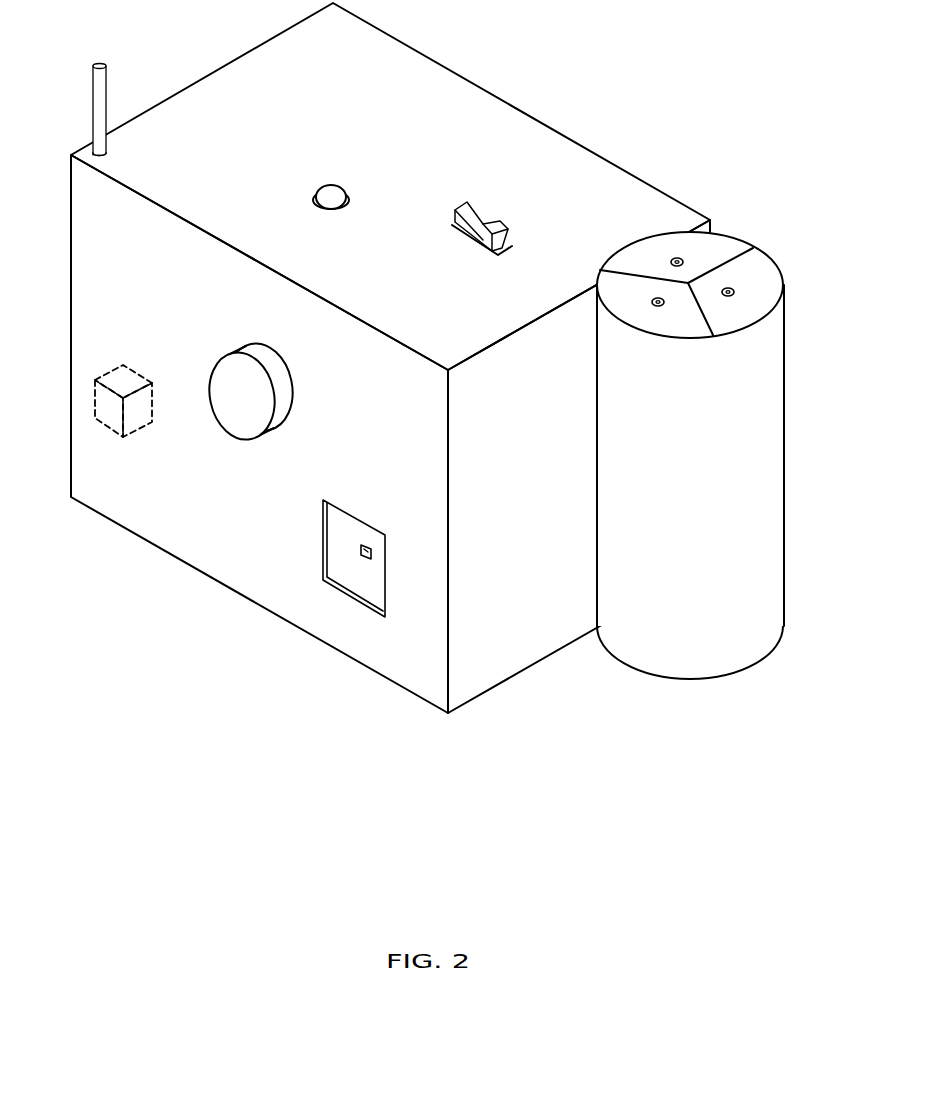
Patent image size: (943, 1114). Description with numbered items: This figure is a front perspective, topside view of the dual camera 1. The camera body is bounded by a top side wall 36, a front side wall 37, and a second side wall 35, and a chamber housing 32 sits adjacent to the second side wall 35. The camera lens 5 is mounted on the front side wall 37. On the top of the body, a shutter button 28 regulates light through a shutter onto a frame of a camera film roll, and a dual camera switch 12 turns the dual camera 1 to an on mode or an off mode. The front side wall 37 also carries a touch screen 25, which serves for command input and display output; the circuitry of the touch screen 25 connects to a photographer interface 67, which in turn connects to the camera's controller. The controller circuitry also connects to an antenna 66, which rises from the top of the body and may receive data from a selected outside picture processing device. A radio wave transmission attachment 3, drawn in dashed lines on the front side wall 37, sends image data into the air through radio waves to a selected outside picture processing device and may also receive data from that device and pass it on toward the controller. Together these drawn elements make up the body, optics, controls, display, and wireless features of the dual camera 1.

The dual camera 1 is at (437, 358).
The radio wave transmission attachment 3 is at (108, 416).
The camera lens 5 is at (240, 420).
The dual camera switch 12 is at (494, 226).
The touch screen 25 is at (353, 589).
The shutter button 28 is at (330, 190).
The chamber housing 32 is at (773, 466).
The second side wall 35 is at (546, 645).
The top side wall 36 is at (523, 123).
The front side wall 37 is at (217, 568).
The antenna 66 is at (96, 85).
The photographer interface 67 is at (365, 559).